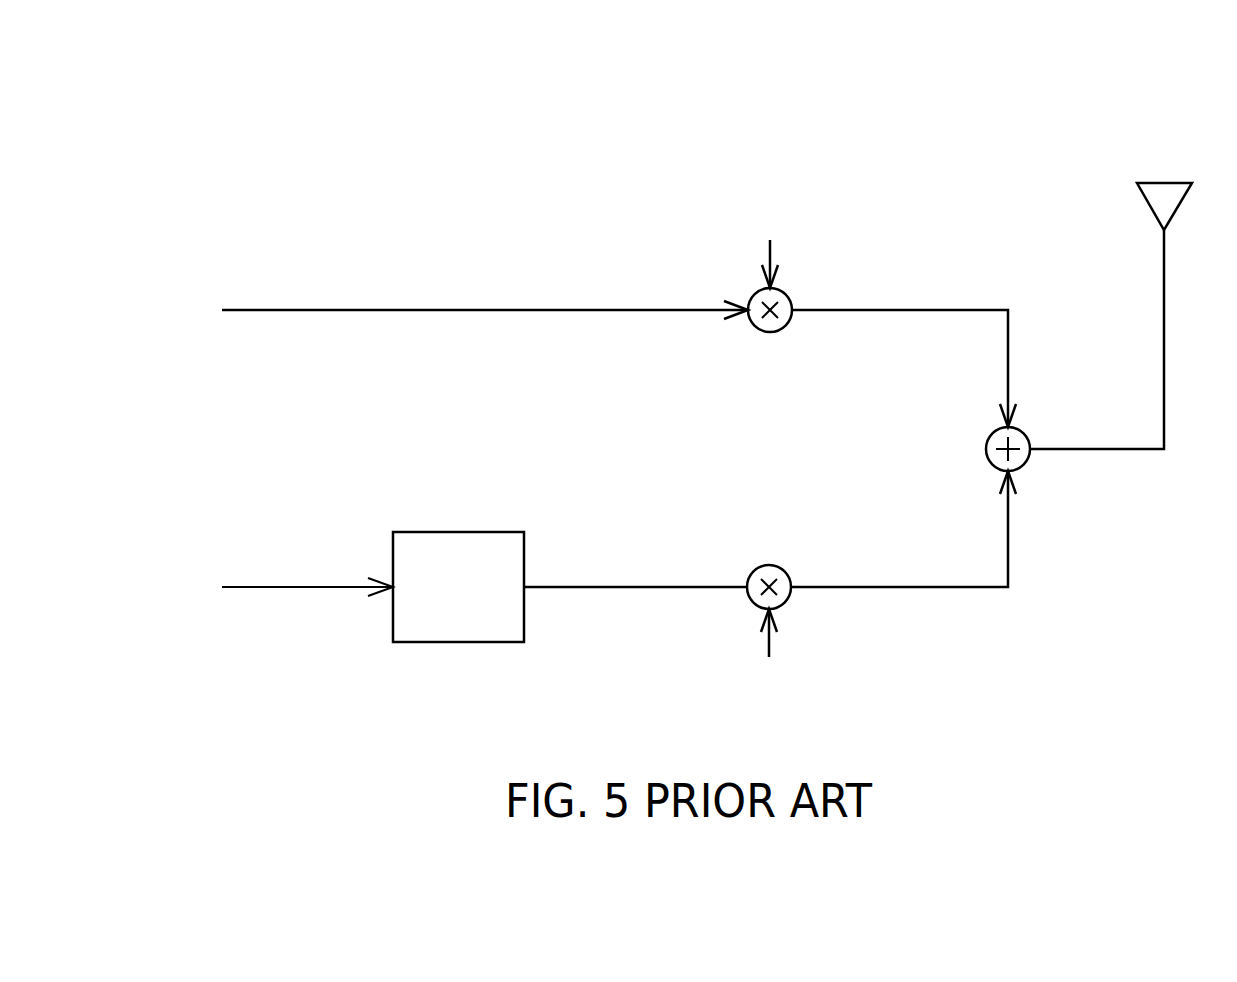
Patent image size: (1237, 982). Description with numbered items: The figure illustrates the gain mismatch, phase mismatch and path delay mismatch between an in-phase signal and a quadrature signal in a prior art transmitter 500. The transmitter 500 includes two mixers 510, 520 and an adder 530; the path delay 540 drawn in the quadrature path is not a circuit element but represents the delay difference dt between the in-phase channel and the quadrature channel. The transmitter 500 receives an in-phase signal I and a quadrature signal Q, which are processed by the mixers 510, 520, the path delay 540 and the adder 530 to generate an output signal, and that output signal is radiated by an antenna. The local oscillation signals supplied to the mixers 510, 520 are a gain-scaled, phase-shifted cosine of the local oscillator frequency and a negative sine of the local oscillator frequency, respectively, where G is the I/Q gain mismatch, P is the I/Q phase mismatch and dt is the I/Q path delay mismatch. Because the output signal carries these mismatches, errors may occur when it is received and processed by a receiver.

The transmitter 500 is at (1103, 100).
The mixer 510 is at (784, 327).
The mixer 520 is at (783, 568).
The adder 530 is at (1018, 467).
The path delay 540 is at (457, 532).